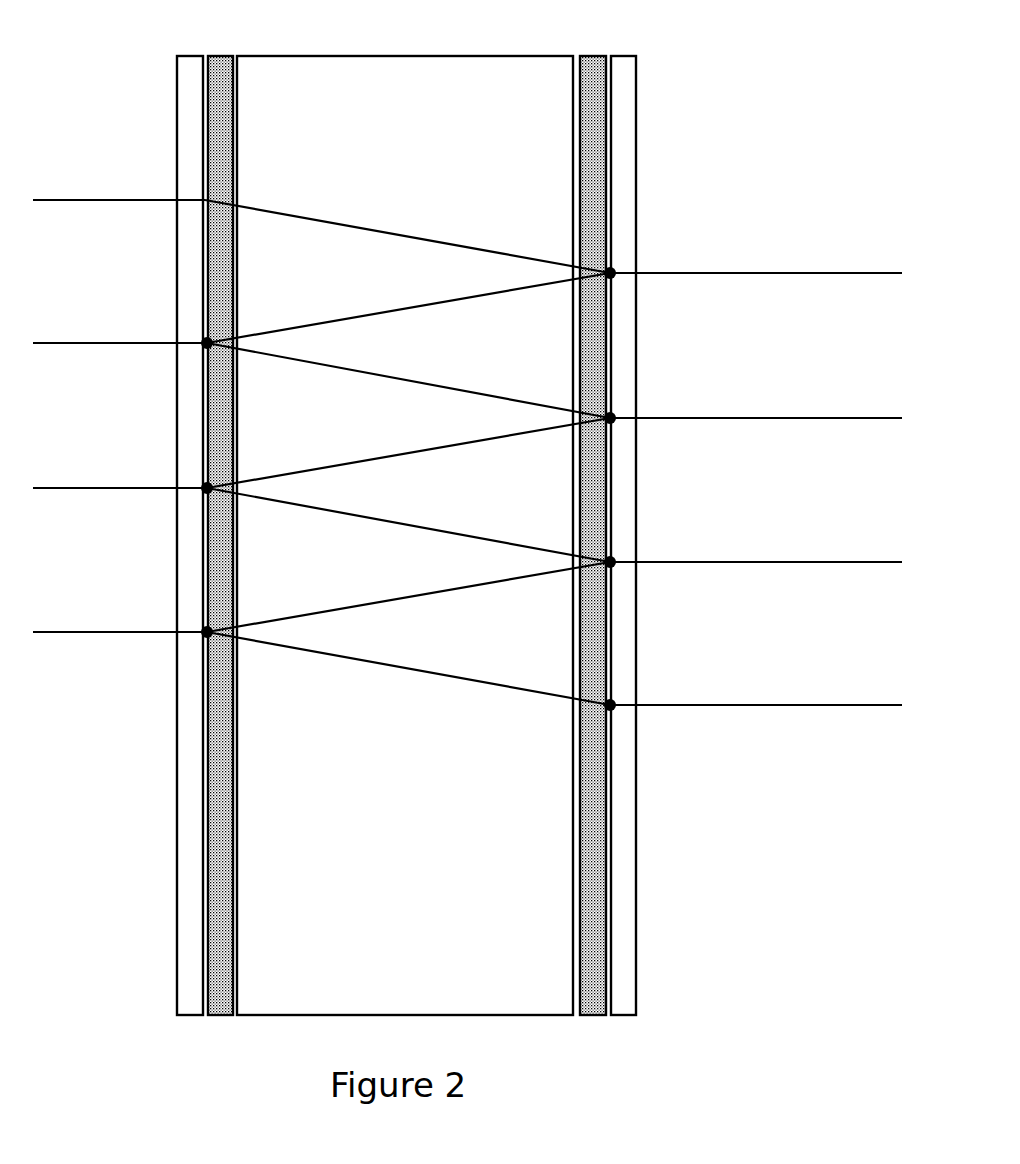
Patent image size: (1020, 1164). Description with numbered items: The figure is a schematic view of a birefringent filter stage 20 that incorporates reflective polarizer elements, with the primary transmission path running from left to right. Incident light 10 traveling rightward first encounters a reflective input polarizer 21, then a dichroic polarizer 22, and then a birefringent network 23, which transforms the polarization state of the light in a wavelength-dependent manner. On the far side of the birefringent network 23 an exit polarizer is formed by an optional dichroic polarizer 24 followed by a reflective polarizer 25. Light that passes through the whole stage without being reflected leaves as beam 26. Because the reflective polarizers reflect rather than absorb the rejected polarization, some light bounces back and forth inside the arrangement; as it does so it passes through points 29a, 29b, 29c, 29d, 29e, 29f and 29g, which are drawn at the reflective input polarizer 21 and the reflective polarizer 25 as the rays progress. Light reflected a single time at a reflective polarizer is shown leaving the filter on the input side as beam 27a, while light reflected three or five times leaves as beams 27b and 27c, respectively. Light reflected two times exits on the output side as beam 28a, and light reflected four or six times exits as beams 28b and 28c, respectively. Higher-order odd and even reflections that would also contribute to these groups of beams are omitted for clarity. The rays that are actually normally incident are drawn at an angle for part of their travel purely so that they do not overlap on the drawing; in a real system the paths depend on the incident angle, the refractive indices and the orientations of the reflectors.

The incident light 10 is at (119, 181).
The birefringent filter stage 20 is at (710, 860).
The reflective input polarizer 21 is at (183, 516).
The dichroic polarizer 22 is at (225, 516).
The birefringent network 23 is at (405, 516).
The dichroic polarizer 24 is at (588, 516).
The reflective polarizer 25 is at (630, 516).
The beam 26 is at (753, 256).
The beam 27a is at (123, 326).
The beam 27b is at (123, 471).
The beam 27c is at (123, 615).
The beam 28a is at (753, 401).
The beam 28b is at (753, 545).
The beam 28c is at (753, 688).
The point 29a is at (407, 236).
The point 29b is at (408, 308).
The point 29c is at (408, 380).
The point 29d is at (408, 453).
The point 29e is at (408, 525).
The point 29f is at (408, 597).
The point 29g is at (408, 668).